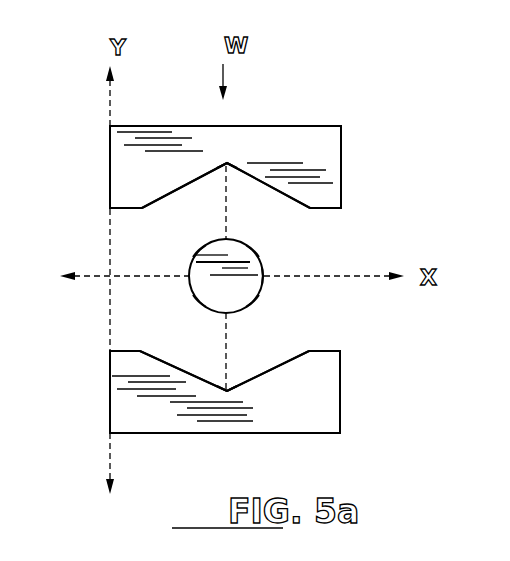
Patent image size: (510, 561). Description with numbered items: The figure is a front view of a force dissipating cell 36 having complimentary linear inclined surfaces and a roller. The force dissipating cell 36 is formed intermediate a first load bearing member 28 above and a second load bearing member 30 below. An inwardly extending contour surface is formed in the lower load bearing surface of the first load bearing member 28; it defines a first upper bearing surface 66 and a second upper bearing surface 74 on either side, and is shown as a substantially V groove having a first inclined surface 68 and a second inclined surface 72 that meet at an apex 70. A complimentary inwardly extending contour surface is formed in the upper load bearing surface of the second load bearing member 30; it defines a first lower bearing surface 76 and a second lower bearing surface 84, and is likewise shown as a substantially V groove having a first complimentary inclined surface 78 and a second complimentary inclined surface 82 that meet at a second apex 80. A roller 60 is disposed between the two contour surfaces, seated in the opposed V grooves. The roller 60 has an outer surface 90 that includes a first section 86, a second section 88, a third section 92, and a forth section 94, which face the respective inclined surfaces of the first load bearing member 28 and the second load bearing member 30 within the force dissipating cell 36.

The first load bearing member 28 is at (341, 126).
The second load bearing member 30 is at (340, 433).
The force dissipating cell 36 is at (282, 80).
The roller 60 is at (189, 272).
The first upper bearing surface 66 is at (128, 208).
The first inclined surface 68 is at (170, 193).
The apex 70 is at (227, 163).
The second inclined surface 72 is at (283, 193).
The second upper bearing surface 74 is at (330, 208).
The first lower bearing surface 76 is at (132, 351).
The first complimentary inclined surface 78 is at (168, 364).
The second apex 80 is at (227, 391).
The second complimentary inclined surface 82 is at (285, 363).
The second lower bearing surface 84 is at (330, 351).
The first section 86 is at (199, 250).
The second section 88 is at (255, 253).
The outer surface 90 is at (264, 272).
The third section 92 is at (253, 302).
The forth section 94 is at (200, 302).